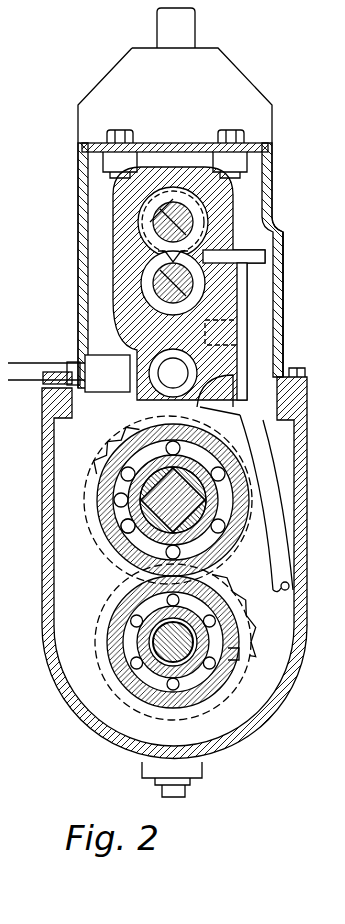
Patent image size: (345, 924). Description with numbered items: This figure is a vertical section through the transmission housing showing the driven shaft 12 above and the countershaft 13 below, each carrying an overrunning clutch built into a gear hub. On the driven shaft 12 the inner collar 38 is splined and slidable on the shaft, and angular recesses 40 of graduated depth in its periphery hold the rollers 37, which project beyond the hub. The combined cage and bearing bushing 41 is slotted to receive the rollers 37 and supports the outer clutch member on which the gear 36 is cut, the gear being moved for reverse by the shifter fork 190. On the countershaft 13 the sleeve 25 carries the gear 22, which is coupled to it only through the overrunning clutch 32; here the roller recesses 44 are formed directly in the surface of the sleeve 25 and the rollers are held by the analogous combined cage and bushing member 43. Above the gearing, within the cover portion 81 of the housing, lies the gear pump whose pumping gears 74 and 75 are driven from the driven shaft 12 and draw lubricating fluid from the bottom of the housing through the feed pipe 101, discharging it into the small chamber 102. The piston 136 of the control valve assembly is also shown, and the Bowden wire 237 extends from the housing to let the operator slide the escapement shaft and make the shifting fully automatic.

The driven shaft 12 is at (183, 508).
The countershaft 13 is at (193, 646).
The gear 22 is at (108, 604).
The sleeve 25 is at (143, 642).
The overrunning clutch 32 is at (133, 667).
The gear 36 is at (143, 493).
The rollers 37 is at (127, 527).
The inner collar 38 is at (130, 504).
The angular recesses 40 is at (143, 500).
The combined cage and bearing bushing 41 is at (133, 455).
The combined cage and bushing member 43 is at (230, 652).
The roller recesses 44 is at (227, 657).
The pumping gear 74 is at (253, 278).
The pumping gear 75 is at (190, 222).
The cover portion 81 is at (284, 316).
The feed pipe 101 is at (275, 592).
The chamber 102 is at (150, 250).
The piston 136 is at (167, 368).
The shifter fork 190 is at (196, 404).
The Bowden wire 237 is at (38, 354).